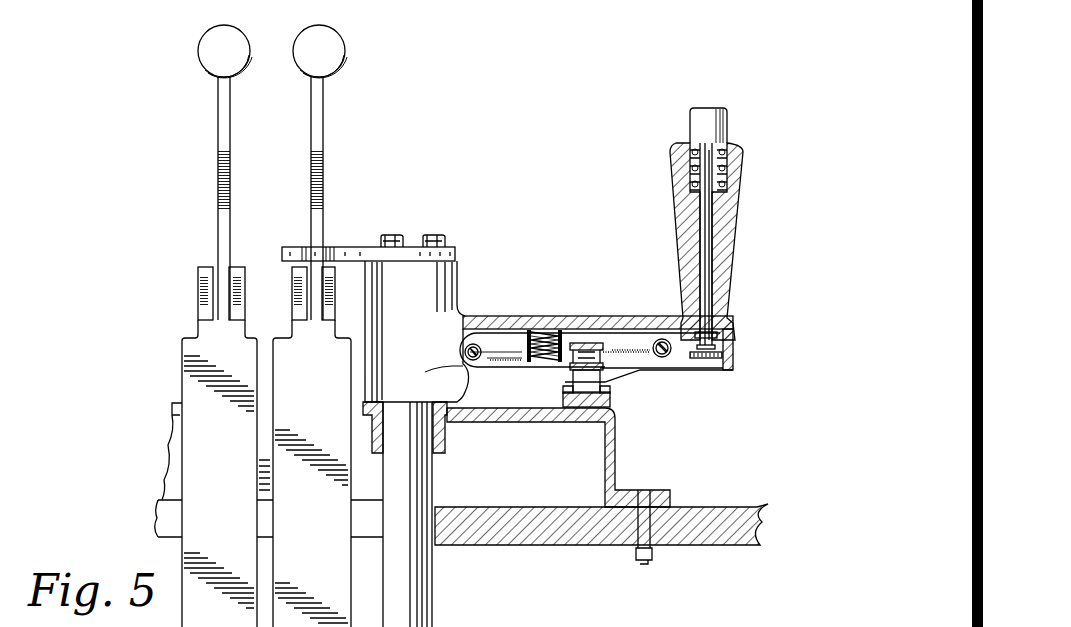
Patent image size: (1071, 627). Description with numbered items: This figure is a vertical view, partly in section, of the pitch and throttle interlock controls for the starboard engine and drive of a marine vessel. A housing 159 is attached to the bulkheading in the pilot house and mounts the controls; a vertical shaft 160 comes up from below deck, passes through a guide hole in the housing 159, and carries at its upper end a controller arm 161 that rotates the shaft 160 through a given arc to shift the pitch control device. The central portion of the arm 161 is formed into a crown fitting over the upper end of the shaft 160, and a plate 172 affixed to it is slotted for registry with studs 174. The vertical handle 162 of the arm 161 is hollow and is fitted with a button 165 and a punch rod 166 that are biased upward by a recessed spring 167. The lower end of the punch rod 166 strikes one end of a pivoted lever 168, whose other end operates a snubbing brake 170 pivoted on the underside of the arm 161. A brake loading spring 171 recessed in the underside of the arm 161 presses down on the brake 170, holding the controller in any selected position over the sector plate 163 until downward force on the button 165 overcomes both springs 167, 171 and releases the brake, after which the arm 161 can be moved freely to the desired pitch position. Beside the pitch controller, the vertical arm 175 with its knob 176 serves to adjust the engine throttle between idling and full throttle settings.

The housing 159 is at (523, 423).
The vertical shaft 160 is at (418, 563).
The controller arm 161 is at (476, 315).
The handle 162 is at (735, 168).
The sector plate 163 is at (611, 402).
The button 165 is at (727, 116).
The punch rod 166 is at (712, 229).
The recessed spring 167 is at (692, 162).
The pivoted lever 168 is at (697, 355).
The snubbing brake 170 is at (596, 343).
The brake loading spring 171 is at (297, 262).
The plate 172 is at (342, 246).
The studs 174 is at (433, 233).
The vertical arm 175 is at (323, 116).
The knob 176 is at (333, 52).